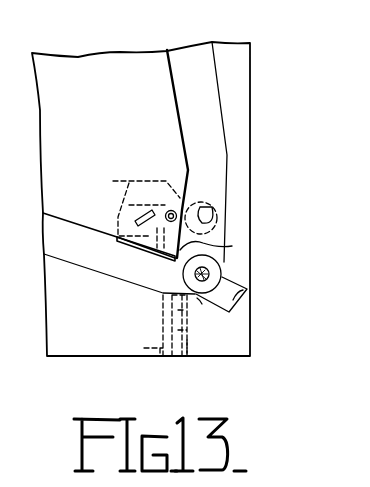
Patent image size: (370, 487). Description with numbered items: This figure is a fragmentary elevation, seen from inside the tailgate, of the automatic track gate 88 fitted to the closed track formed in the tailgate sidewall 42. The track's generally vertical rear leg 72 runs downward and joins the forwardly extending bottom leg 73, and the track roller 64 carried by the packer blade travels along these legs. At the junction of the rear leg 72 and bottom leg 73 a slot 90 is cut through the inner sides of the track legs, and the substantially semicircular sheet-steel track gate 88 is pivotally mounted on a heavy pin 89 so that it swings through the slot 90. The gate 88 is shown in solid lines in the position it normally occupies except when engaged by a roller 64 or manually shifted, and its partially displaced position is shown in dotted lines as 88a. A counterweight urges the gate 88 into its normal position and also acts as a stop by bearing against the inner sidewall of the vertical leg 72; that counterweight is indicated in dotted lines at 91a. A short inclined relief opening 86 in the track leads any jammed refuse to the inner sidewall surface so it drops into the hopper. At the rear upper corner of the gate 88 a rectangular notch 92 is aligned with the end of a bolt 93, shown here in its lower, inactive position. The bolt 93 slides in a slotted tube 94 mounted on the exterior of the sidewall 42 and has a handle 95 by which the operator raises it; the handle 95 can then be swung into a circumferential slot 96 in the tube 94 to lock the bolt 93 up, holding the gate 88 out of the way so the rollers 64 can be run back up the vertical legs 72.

The sidewall 42 is at (122, 104).
The pin 89 is at (183, 196).
The rear leg 72 is at (224, 163).
The track gate in partially displaced position 88a is at (127, 177).
The counterweight in dotted-line position 91a is at (121, 222).
The slot 90 is at (128, 244).
The bottom leg 73 is at (110, 272).
The track gate 88 is at (232, 246).
The rectangular notch 92 is at (206, 210).
The track roller 64 is at (247, 290).
The relief opening 86 is at (247, 290).
The circumferential slot 96 is at (197, 298).
The slotted tube 94 is at (188, 332).
The handle 95 is at (143, 355).
The bolt 93 is at (188, 356).